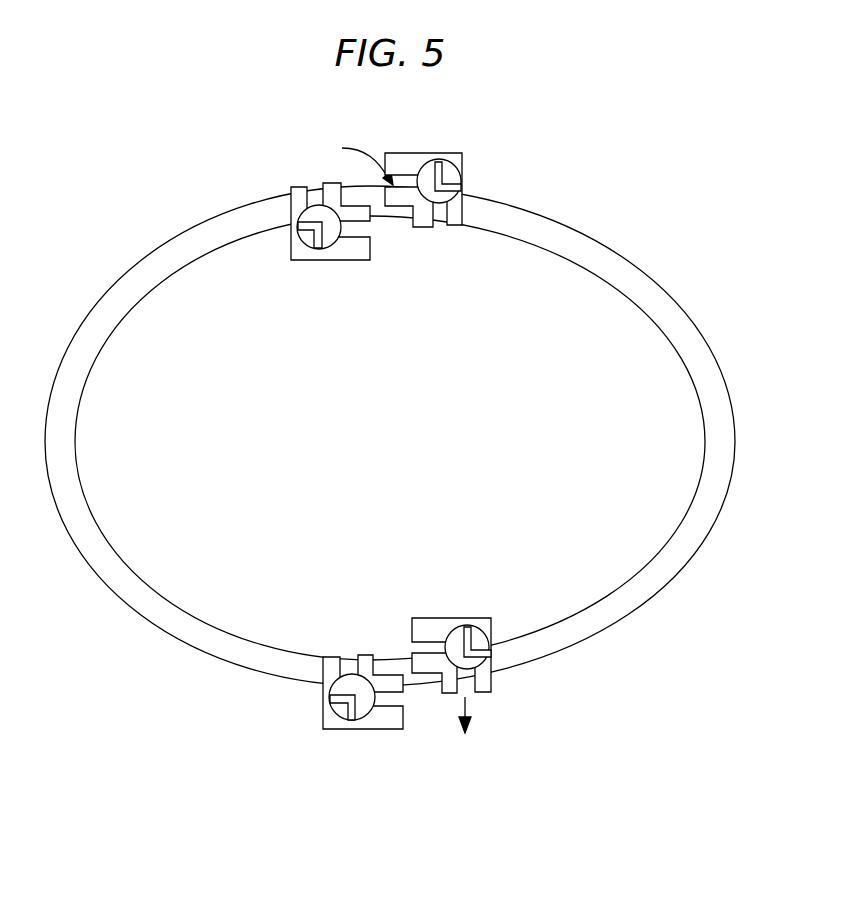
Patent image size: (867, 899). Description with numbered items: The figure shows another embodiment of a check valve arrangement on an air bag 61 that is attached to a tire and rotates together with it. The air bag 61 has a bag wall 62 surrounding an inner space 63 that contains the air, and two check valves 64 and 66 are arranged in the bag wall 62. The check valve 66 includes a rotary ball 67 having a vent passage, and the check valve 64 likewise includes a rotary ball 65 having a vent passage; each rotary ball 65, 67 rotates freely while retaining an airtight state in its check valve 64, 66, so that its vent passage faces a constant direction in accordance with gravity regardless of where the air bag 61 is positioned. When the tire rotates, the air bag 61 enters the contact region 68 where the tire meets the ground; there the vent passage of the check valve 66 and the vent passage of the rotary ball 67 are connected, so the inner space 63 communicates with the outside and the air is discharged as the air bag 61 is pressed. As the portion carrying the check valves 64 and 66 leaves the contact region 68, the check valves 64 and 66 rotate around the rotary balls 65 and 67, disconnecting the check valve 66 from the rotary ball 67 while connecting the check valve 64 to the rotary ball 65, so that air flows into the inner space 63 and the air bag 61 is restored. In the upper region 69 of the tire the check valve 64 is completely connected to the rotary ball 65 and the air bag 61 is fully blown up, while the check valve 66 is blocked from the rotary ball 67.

The air bag 61 is at (398, 430).
The bag wall 62 is at (147, 277).
The inner space 63 is at (623, 523).
The check valve 64 is at (457, 156).
The rotary ball 65 is at (452, 179).
The check valve 66 is at (303, 190).
The rotary ball 67 is at (307, 238).
The contact region 68 is at (478, 586).
The upper region 69 is at (463, 311).